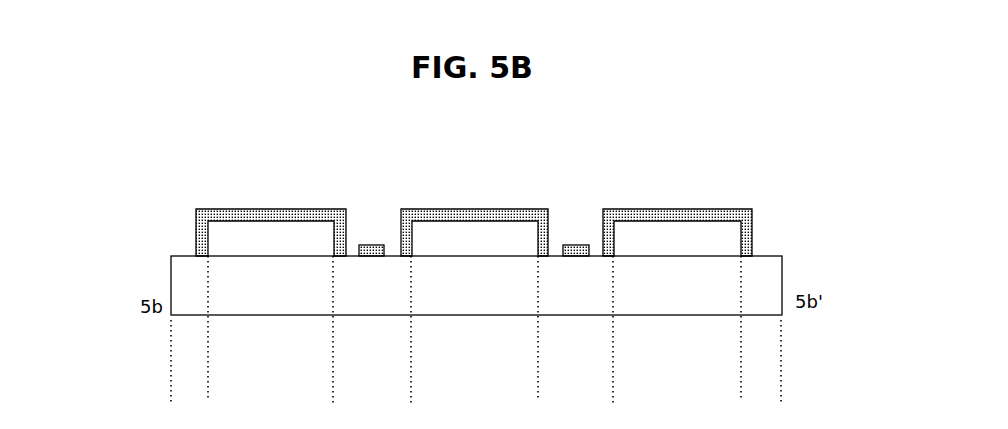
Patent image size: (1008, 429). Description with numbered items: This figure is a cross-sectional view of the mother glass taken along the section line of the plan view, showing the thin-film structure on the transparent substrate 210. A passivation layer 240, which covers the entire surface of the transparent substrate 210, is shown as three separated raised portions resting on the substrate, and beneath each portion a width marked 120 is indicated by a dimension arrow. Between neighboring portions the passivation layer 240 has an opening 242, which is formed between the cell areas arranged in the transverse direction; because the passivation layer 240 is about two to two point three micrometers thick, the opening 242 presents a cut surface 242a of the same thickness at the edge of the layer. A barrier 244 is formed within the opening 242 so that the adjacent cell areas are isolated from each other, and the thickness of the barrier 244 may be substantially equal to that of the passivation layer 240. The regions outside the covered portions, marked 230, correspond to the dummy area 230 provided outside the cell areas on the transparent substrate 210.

The transparent substrate 210 is at (183, 258).
The passivation layer 240 is at (273, 214).
The opening 242 is at (378, 224).
The cut surface 242a is at (600, 222).
The barrier 244 is at (361, 245).
The light emitting region width 120 is at (333, 342).
The dummy area 230 is at (238, 390).